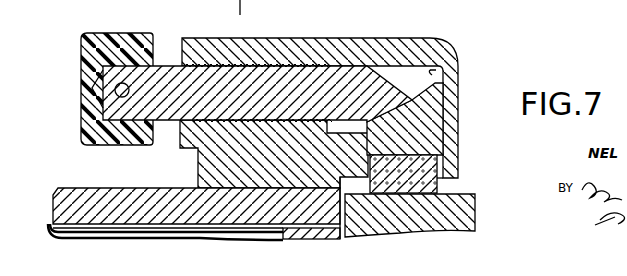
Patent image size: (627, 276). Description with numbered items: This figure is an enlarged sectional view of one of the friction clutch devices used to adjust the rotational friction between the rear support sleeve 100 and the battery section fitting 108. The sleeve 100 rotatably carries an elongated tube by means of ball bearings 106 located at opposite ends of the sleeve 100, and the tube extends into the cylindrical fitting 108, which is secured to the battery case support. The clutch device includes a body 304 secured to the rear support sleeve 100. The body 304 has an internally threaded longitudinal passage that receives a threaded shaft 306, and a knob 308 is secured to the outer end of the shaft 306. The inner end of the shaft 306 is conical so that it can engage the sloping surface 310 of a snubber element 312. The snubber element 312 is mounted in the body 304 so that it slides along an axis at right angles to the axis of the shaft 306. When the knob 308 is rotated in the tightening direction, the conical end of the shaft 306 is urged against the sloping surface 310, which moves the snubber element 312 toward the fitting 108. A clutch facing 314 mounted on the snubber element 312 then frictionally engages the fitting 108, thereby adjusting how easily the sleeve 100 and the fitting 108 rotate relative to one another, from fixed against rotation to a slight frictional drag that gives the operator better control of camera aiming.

The rear support sleeve 100 is at (140, 188).
The ball bearings 106 is at (313, 238).
The cylindrical fitting 108 is at (467, 213).
The body 304 is at (352, 46).
The threaded shaft 306 is at (167, 64).
The knob 308 is at (103, 33).
The sloping surface 310 is at (452, 70).
The snubber element 312 is at (437, 102).
The clutch facing 314 is at (438, 192).